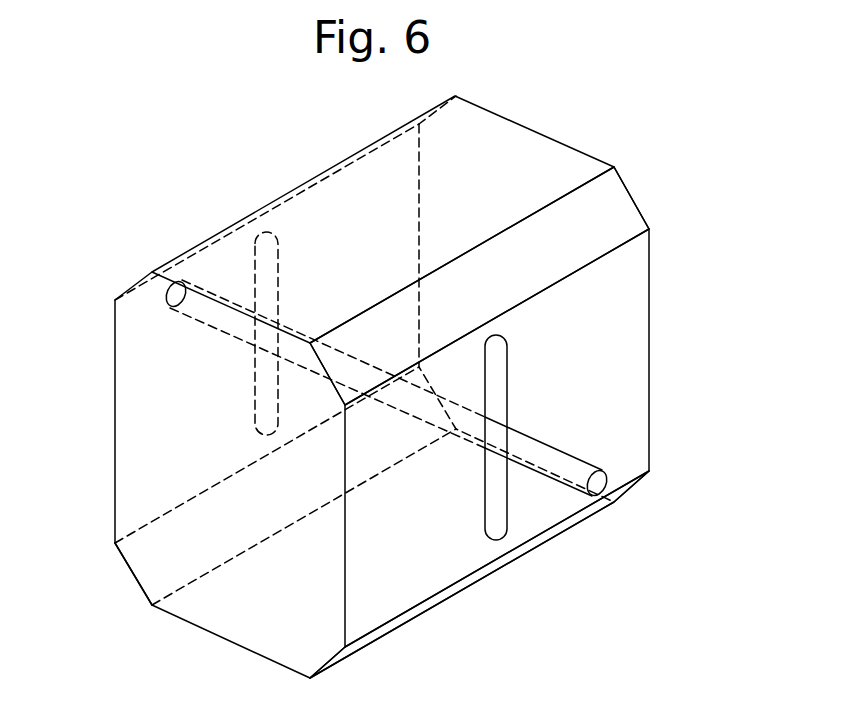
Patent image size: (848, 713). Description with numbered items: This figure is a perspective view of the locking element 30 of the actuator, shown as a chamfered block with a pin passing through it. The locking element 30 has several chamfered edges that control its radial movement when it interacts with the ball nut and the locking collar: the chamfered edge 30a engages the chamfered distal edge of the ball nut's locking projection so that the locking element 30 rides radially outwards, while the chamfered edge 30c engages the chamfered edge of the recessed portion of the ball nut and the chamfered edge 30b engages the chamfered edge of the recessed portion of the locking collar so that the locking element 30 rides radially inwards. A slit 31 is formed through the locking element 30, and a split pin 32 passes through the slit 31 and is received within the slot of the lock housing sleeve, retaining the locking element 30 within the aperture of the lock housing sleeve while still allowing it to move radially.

The locking element 30 is at (686, 151).
The chamfered edge 30a is at (334, 660).
The chamfered edge 30b is at (610, 213).
The chamfered edge 30c is at (131, 570).
The slit 31 is at (507, 357).
The split pin 32 is at (609, 497).